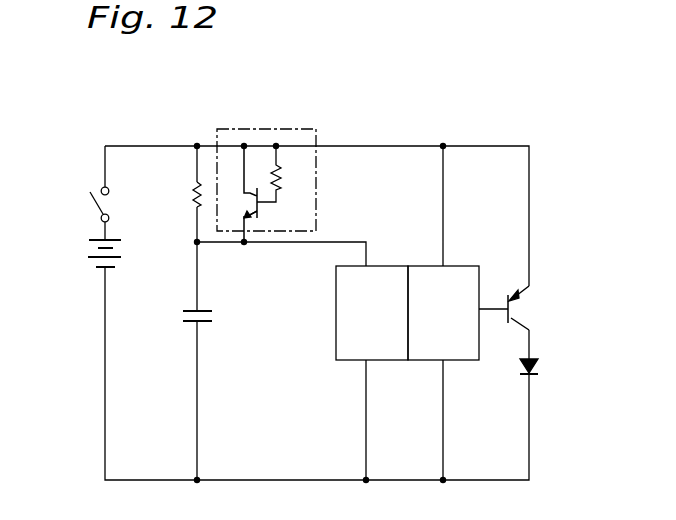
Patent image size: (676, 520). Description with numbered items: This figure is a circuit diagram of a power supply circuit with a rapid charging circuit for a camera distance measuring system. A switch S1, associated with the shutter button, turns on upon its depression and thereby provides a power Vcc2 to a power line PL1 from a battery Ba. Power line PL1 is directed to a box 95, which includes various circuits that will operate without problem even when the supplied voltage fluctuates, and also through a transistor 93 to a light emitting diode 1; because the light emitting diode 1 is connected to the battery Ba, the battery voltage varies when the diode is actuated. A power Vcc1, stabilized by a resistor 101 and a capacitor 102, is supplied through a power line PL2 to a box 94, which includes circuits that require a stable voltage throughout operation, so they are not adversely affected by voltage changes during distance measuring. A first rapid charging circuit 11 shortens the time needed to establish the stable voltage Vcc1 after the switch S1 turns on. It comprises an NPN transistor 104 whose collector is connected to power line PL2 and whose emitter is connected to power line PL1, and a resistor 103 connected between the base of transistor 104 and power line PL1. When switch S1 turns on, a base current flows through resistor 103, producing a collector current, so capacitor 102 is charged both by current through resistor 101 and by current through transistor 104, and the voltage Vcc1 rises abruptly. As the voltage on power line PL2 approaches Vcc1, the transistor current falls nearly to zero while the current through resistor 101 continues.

The switch S1 is at (90, 205).
The battery Ba is at (88, 250).
The resistor 101 is at (191, 195).
The capacitor 102 is at (212, 313).
The first rapid charging circuit 11 is at (267, 129).
The resistor 103 is at (283, 172).
The NPN transistor 104 is at (262, 210).
The power line PL1 is at (415, 146).
The power line PL2 is at (320, 243).
The stable voltage Vcc1 is at (275, 256).
The power Vcc2 is at (348, 137).
The box 94 is at (385, 265).
The box 95 is at (465, 265).
The transistor 93 is at (520, 312).
The light emitting diode 1 is at (538, 371).